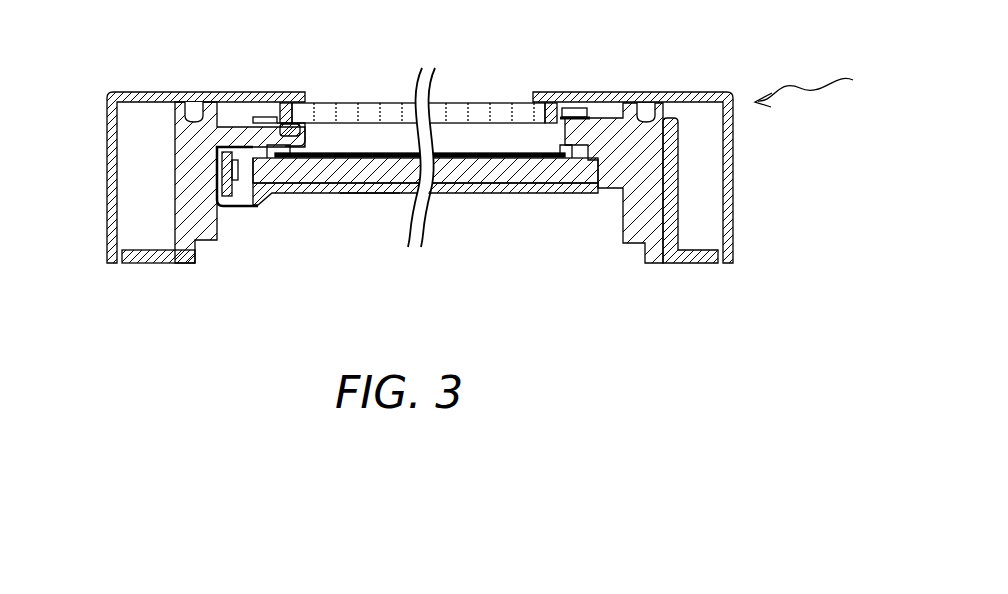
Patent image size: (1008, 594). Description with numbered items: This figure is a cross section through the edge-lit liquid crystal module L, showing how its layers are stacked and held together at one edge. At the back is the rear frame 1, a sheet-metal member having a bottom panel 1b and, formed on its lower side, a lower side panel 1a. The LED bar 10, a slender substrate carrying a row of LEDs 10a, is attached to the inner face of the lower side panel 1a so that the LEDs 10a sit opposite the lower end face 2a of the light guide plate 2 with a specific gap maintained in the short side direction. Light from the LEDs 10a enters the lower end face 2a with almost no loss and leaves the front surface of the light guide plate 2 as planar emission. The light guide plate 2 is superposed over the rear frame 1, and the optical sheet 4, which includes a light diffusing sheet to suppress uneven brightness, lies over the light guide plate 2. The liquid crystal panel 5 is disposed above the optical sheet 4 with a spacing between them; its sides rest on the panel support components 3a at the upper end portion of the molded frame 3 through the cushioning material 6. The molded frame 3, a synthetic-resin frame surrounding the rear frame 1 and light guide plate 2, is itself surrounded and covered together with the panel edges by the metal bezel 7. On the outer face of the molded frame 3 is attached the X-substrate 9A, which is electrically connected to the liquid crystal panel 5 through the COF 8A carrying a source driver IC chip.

The rear frame 1 is at (465, 194).
The lower side panel 1a is at (224, 192).
The bottom panel 1b is at (373, 193).
The light guide plate 2 is at (505, 172).
The lower end face 2a is at (237, 150).
The molded frame 3 is at (180, 186).
The panel support component 3a is at (288, 138).
The optical sheet 4 is at (380, 152).
The liquid crystal panel 5 is at (470, 103).
The cushioning material 6 is at (287, 133).
The bezel 7 is at (113, 92).
The clip-on-film (COF) 8A is at (602, 108).
The X-substrate 9A is at (678, 196).
The LED bar 10 is at (230, 200).
The LED 10a is at (248, 200).
The liquid crystal module L is at (812, 85).